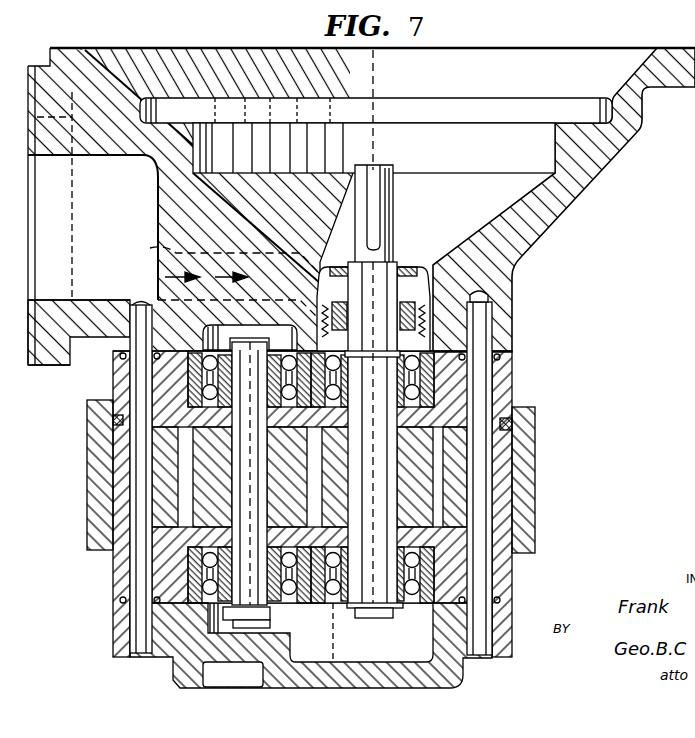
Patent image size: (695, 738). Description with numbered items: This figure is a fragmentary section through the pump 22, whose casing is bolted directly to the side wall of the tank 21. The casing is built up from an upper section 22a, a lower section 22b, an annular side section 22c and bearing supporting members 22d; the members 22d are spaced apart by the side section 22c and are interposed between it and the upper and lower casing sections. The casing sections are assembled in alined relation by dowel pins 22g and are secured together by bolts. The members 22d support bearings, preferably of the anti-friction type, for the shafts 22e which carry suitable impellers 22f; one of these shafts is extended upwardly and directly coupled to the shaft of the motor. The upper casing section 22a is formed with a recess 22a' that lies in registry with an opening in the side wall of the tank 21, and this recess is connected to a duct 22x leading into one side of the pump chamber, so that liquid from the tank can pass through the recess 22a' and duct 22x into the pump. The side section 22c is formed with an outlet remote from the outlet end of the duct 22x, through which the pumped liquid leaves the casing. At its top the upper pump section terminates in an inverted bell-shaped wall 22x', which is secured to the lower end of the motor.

The tank 21 is at (32, 377).
The pump 22 is at (555, 332).
The upper section 22a is at (361, 200).
The recess 22a' is at (93, 215).
The lower section 22b is at (113, 637).
The annular side section 22c is at (242, 457).
The bearing supporting members 22d is at (506, 388).
The shafts 22e is at (263, 613).
The impellers 22f is at (228, 513).
The dowel pins 22g is at (488, 486).
The duct 22x is at (223, 280).
The inverted bell-shaped wall 22x' is at (407, 135).